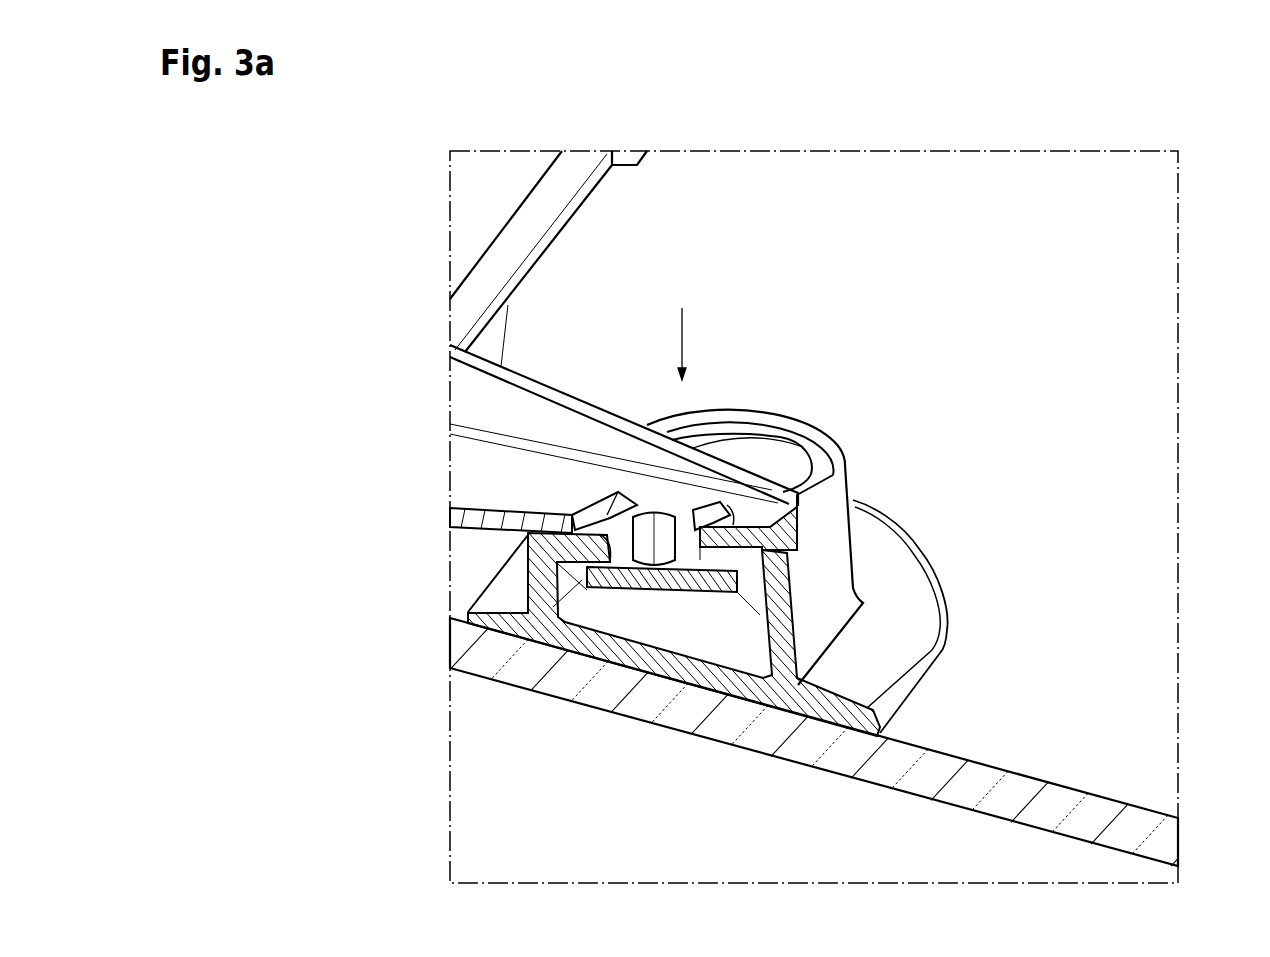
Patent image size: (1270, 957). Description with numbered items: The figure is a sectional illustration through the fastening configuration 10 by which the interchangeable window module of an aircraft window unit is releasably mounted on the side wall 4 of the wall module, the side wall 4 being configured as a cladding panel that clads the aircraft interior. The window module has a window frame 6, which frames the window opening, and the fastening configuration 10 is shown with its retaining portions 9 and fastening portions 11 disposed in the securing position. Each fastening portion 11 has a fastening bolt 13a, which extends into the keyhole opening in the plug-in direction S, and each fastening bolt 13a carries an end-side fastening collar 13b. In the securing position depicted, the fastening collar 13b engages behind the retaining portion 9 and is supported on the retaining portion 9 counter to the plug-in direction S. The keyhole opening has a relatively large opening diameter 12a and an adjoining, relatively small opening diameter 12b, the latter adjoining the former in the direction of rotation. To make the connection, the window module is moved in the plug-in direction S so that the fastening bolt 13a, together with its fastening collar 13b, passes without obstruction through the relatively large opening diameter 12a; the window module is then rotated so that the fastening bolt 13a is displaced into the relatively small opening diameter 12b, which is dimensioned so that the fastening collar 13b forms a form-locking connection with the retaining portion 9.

The side wall 4 is at (1145, 233).
The window frame 6 is at (493, 200).
The retaining portion 9 is at (858, 673).
The fastening configuration 10 is at (487, 753).
The fastening portion 11 is at (560, 485).
The relatively large opening diameter 12a is at (777, 467).
The relatively small opening diameter 12b is at (707, 485).
The fastening bolt 13a is at (687, 540).
The fastening collar 13b is at (635, 578).
The plug-in direction S is at (677, 333).